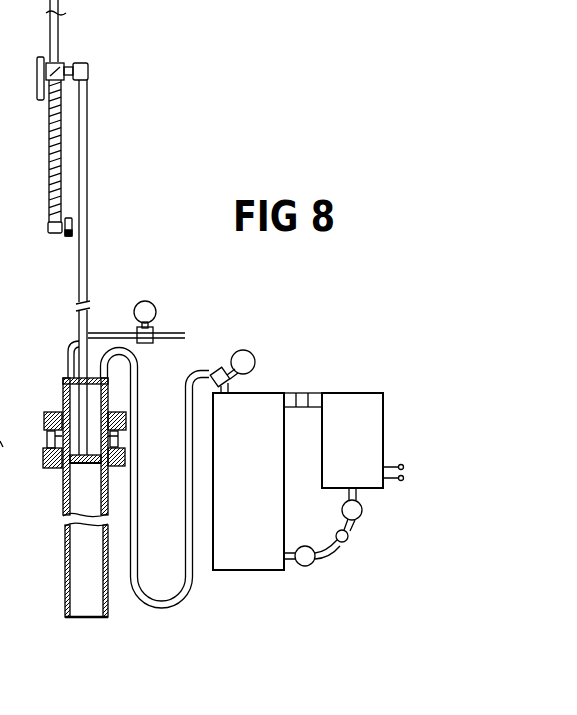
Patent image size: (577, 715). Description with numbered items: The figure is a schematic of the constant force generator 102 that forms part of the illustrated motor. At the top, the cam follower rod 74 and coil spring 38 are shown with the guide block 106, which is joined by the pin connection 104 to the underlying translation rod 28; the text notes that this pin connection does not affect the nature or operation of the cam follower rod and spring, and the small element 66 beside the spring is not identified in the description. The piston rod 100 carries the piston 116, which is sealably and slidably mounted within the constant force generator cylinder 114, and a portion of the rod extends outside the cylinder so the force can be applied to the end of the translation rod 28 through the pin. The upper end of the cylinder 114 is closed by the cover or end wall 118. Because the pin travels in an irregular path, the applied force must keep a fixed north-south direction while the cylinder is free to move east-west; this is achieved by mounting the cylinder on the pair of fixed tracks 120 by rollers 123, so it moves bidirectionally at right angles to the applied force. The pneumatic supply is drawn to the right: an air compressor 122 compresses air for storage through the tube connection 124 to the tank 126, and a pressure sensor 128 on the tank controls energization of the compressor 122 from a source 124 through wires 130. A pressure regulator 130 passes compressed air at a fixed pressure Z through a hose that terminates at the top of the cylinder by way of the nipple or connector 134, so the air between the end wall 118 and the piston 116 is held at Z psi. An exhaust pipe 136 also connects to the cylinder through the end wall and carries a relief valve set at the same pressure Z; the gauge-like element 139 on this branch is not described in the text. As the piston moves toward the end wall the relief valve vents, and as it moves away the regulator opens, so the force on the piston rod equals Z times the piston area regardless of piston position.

The translation rod 28 is at (40, 78).
The coil spring 38 is at (50, 140).
The spring end block 66 is at (70, 240).
The cam follower rod 74 is at (57, 45).
The piston rod 100 is at (87, 263).
The force generator 102 is at (67, 531).
The pin connection 104 is at (87, 95).
The guide block 106 is at (64, 66).
The constant force generator cylinder 114 is at (109, 566).
The piston 116 is at (72, 465).
The cover or end wall 118 is at (108, 399).
The fixed tracks 120 is at (123, 441).
The air compressor 122 is at (367, 432).
The rollers 123 is at (112, 437).
The tube connection 124 is at (310, 374).
The tank 126 is at (262, 487).
The pressure sensor 128 is at (303, 566).
The pressure regulator 130 is at (246, 358).
The nipple or connector 134 is at (101, 374).
The exhaust pipe 136 is at (88, 333).
The pressure gauge 139 is at (156, 312).